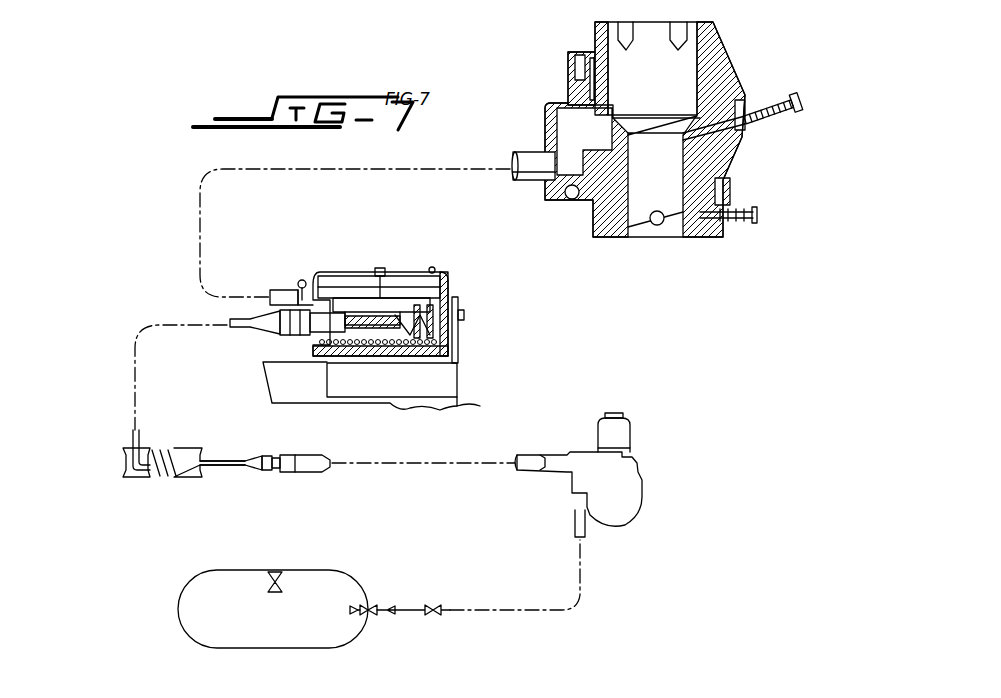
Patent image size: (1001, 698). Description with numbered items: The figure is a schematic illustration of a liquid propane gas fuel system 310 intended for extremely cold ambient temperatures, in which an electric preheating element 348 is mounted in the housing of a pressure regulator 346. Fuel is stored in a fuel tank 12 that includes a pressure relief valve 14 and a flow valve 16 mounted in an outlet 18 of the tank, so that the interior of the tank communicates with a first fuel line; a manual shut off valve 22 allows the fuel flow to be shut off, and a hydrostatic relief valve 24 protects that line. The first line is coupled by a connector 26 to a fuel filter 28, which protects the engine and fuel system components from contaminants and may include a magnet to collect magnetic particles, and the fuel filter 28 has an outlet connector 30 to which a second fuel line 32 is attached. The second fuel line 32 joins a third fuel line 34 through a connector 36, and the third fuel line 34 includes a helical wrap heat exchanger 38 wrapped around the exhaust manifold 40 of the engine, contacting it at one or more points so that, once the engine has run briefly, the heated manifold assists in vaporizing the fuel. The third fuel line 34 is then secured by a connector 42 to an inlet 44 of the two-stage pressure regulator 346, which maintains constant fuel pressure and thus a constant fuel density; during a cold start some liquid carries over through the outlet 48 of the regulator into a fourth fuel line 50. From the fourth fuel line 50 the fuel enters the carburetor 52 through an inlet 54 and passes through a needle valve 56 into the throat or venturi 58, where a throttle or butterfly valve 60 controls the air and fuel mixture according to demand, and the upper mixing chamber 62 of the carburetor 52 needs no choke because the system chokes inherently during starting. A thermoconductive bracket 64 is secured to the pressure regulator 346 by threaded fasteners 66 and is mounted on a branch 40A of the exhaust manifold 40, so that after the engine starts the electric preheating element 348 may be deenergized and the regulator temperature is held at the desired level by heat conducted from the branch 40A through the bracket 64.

The fuel tank 12 is at (352, 575).
The pressure relief valve 14 is at (278, 580).
The flow valve 16 is at (350, 612).
The outlet 18 is at (372, 607).
The manual shut off valve 22 is at (378, 612).
The hydrostatic relief valve 24 is at (436, 607).
The connector 26 is at (576, 513).
The fuel filter 28 is at (606, 474).
The outlet connector 30 is at (585, 450).
The second fuel line 32 is at (450, 455).
The third fuel line 34 is at (221, 460).
The connector 36 is at (268, 456).
The helical wrap heat exchanger 38 is at (172, 481).
The exhaust manifold 40 is at (135, 476).
The branch of the exhaust manifold 40A is at (295, 388).
The connector 42 is at (265, 328).
The inlet 44 is at (300, 335).
The outlet 48 is at (290, 290).
The fourth fuel line 50 is at (410, 166).
The carburetor 52 is at (657, 147).
The inlet 54 is at (531, 180).
The needle valve 56 is at (793, 110).
The throat or venturi 58 is at (662, 173).
The throttle or butterfly valve 60 is at (650, 226).
The upper mixing chamber 62 is at (662, 85).
The thermoconductive bracket 64 is at (458, 382).
The threaded fasteners 66 is at (466, 313).
The system 310 is at (113, 290).
The pressure regulator 346 is at (415, 305).
The electric preheating element 348 is at (450, 349).